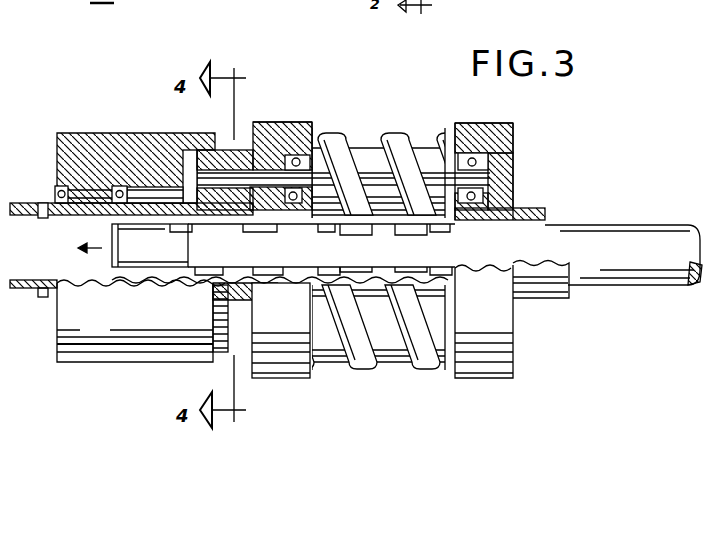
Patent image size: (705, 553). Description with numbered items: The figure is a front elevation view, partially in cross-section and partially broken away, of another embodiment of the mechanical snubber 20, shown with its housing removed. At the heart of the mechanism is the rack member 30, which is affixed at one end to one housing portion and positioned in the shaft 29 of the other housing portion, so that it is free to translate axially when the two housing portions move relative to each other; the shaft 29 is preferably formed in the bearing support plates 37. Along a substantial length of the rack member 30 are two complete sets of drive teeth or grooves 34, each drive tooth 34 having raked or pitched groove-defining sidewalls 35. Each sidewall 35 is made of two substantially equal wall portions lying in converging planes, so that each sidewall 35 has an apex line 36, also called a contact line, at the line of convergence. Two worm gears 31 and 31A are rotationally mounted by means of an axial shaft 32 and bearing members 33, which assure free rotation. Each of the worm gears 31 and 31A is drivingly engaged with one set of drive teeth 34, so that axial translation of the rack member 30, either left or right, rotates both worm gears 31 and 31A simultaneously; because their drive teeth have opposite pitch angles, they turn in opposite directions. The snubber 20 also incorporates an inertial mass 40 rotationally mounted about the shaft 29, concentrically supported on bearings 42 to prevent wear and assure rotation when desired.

The mechanical snubber 20 is at (432, 382).
The shaft 29 is at (62, 218).
The rack member 30 is at (621, 242).
The worm gear 31 is at (372, 130).
The worm gear 31A is at (333, 362).
The axial shaft 32 is at (258, 130).
The bearing members 33 is at (299, 158).
The drive teeth 34 is at (210, 266).
The raked sidewalls 35 is at (350, 234).
The apex line 36 is at (188, 226).
The bearing support plates 37 is at (283, 122).
The inertial mass 40 is at (122, 142).
The bearings 42 is at (110, 208).